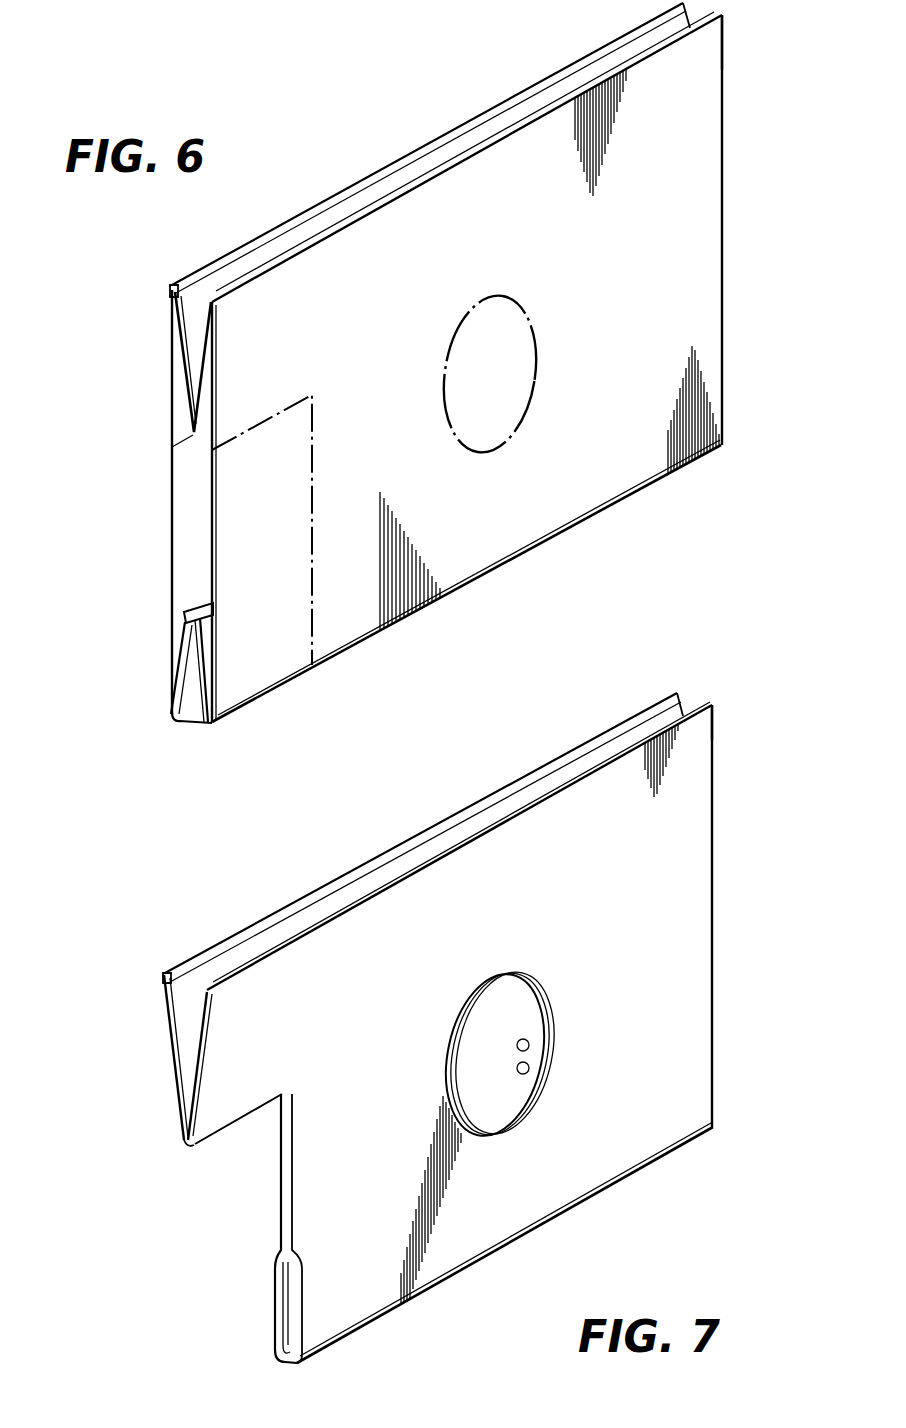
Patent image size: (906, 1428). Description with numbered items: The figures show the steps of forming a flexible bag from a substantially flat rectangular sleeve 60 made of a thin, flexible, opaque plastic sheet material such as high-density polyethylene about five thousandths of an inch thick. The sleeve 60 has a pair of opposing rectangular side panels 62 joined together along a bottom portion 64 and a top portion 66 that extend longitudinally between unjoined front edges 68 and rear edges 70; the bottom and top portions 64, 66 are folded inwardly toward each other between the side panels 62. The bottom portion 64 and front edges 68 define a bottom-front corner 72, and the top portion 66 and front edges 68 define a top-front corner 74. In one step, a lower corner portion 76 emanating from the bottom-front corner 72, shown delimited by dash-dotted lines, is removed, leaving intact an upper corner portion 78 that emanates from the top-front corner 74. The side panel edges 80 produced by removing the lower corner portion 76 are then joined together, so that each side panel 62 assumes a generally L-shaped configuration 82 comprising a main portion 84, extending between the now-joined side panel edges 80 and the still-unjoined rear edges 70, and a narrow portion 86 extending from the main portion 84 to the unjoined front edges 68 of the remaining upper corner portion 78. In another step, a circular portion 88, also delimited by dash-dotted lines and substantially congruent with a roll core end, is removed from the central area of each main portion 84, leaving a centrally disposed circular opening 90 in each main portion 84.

In FIG. 6, the rectangular sleeve 60 is at (600, 533).
In FIG. 6, the side panels 62 is at (192, 462).
In FIG. 7, the side panels 62 is at (503, 1217).
In FIG. 6, the bottom portion 64 is at (190, 703).
In FIG. 7, the bottom portion 64 is at (277, 1340).
In FIG. 6, the top portion 66 is at (212, 340).
In FIG. 7, the top portion 66 is at (187, 1009).
In FIG. 6, the front edges 68 is at (237, 538).
In FIG. 7, the front edges 68 is at (192, 1088).
In FIG. 6, the rear edges 70 is at (720, 68).
In FIG. 7, the rear edges 70 is at (717, 740).
In FIG. 6, the bottom-front corner 72 is at (226, 698).
In FIG. 6, the top-front corner 74 is at (289, 303).
In FIG. 6, the lower corner portion 76 is at (245, 548).
In FIG. 6, the upper corner portion 78 is at (260, 368).
In FIG. 7, the upper corner portion 78 is at (225, 1077).
In FIG. 7, the side panel edges 80 is at (285, 1180).
In FIG. 7, the L-shaped configuration 82 is at (228, 1010).
In FIG. 6, the main portion 84 is at (356, 183).
In FIG. 7, the main portion 84 is at (435, 823).
In FIG. 7, the narrow portion 86 is at (179, 968).
In FIG. 6, the circular portion 88 is at (507, 376).
In FIG. 7, the circular opening 90 is at (530, 1072).